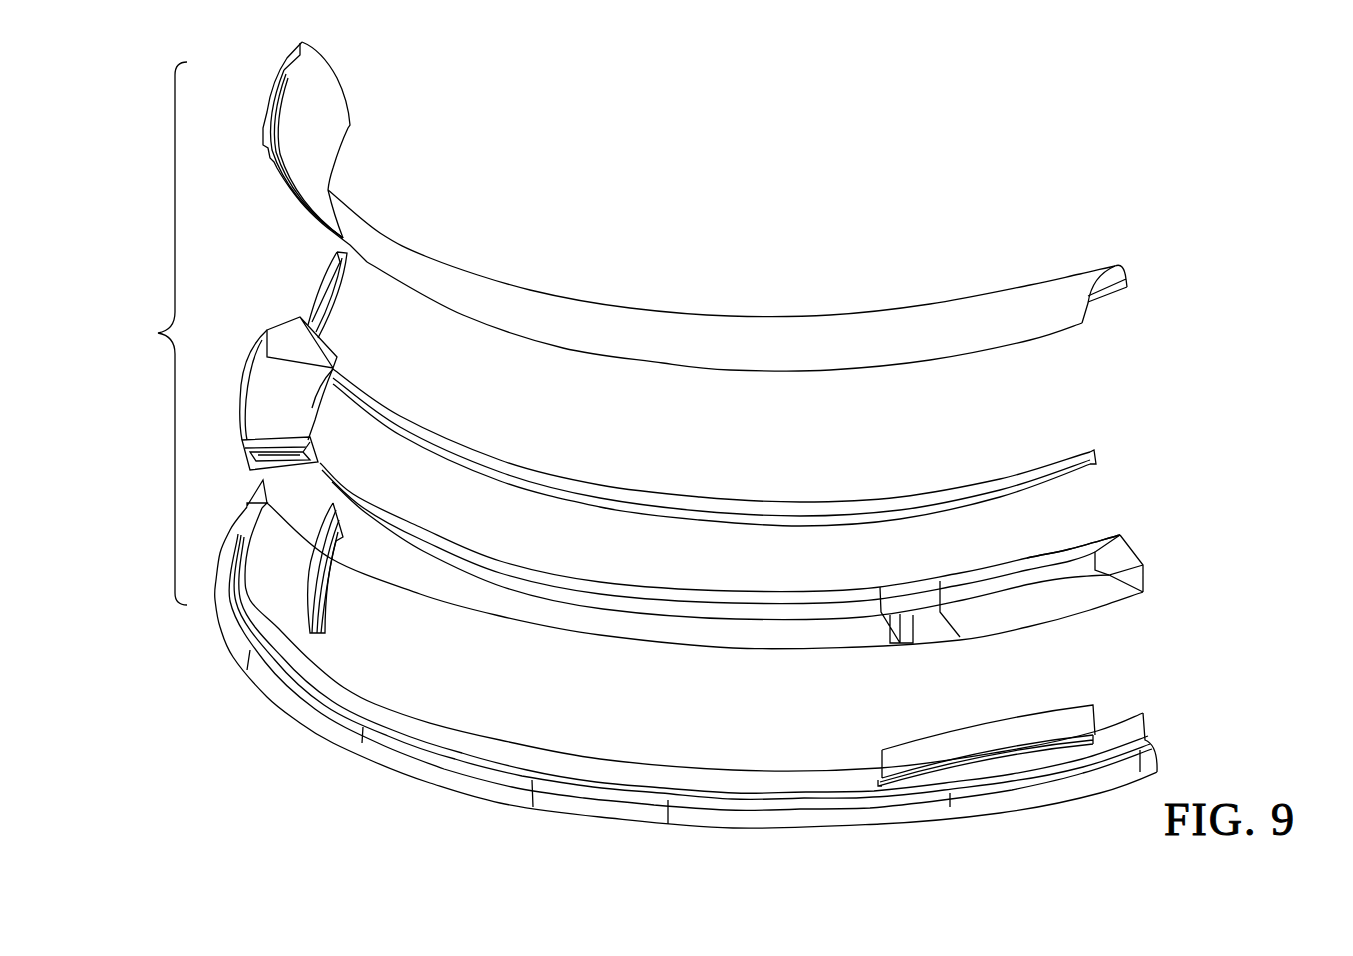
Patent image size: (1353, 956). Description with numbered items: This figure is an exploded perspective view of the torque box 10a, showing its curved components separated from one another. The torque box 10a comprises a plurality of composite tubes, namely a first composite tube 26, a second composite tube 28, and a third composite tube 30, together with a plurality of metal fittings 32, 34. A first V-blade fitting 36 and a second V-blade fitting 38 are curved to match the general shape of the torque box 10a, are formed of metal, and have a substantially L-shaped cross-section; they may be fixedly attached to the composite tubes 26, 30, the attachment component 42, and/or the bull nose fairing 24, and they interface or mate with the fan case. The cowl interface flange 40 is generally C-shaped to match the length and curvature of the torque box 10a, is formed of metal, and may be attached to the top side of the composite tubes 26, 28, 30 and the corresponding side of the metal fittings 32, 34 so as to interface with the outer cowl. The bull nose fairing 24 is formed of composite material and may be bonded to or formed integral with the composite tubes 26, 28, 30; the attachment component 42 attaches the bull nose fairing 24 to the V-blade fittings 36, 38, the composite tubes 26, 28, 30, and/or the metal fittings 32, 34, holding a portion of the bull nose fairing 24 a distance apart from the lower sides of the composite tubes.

The torque box 10a is at (152, 333).
The bull nose fairing 24 is at (780, 332).
The first composite tube 26 is at (1033, 563).
The second composite tube 28 is at (775, 593).
The third composite tube 30 is at (272, 390).
The metal fitting 32 is at (915, 587).
The metal fitting 34 is at (318, 450).
The first V-blade fitting 36 is at (990, 750).
The second V-blade fitting 38 is at (317, 608).
The cowl interface flange 40 is at (390, 750).
The attachment component 42 is at (873, 498).